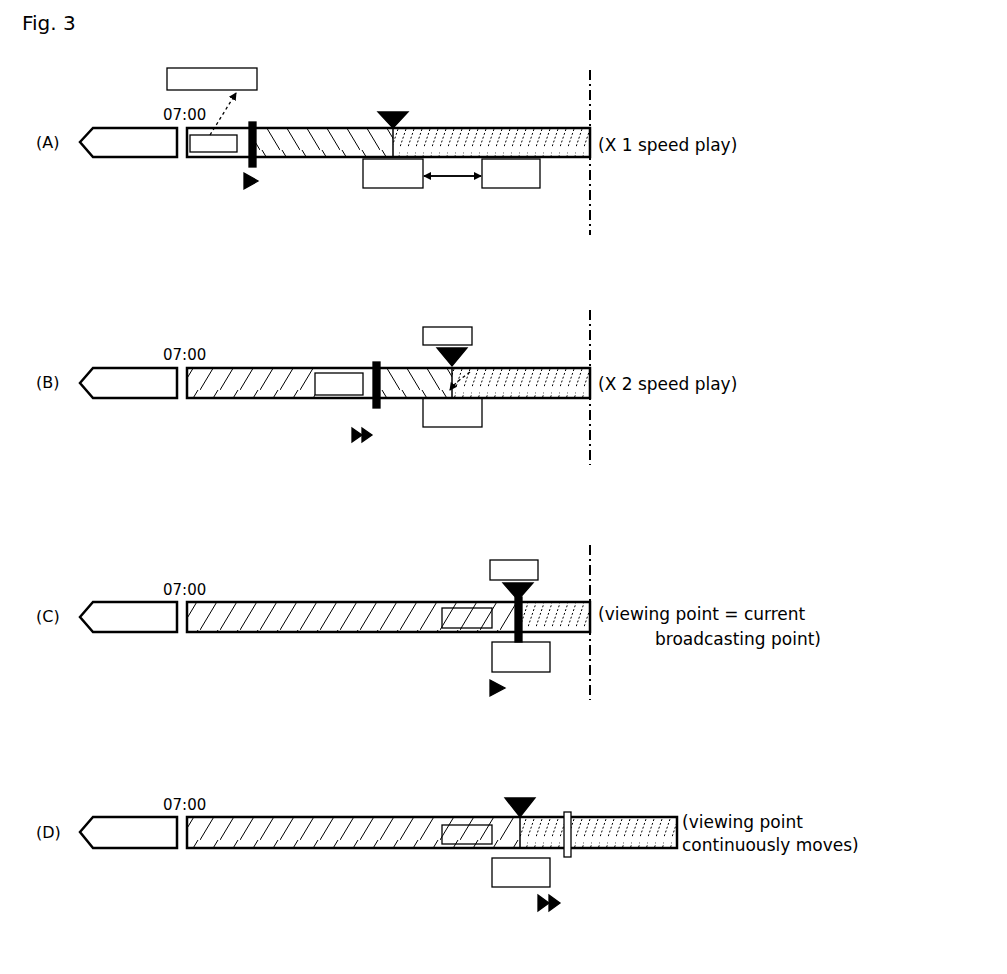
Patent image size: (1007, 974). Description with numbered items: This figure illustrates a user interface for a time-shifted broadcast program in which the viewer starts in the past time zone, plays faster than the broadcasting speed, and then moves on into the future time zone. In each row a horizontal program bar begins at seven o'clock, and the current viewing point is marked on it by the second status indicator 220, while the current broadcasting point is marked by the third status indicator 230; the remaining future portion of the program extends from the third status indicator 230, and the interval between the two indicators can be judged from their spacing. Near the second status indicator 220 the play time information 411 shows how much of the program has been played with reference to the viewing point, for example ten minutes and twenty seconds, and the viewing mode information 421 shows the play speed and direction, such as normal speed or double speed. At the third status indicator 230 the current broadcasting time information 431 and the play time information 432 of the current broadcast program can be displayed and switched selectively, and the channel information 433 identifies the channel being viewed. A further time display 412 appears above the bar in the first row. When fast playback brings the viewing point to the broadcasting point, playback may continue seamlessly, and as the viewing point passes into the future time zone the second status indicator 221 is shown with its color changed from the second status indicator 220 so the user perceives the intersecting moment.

The second status indicator 220 is at (257, 126).
The second status indicator (color-changed) 221 is at (570, 812).
The third status indicator 230 is at (395, 108).
The play time information 411 is at (210, 160).
The accumulated time display 412 is at (165, 73).
The viewing mode information 421 is at (242, 182).
The current broadcasting time information 431 is at (393, 190).
The play time information of the current broadcast program 432 is at (528, 190).
The channel information 433 is at (446, 318).